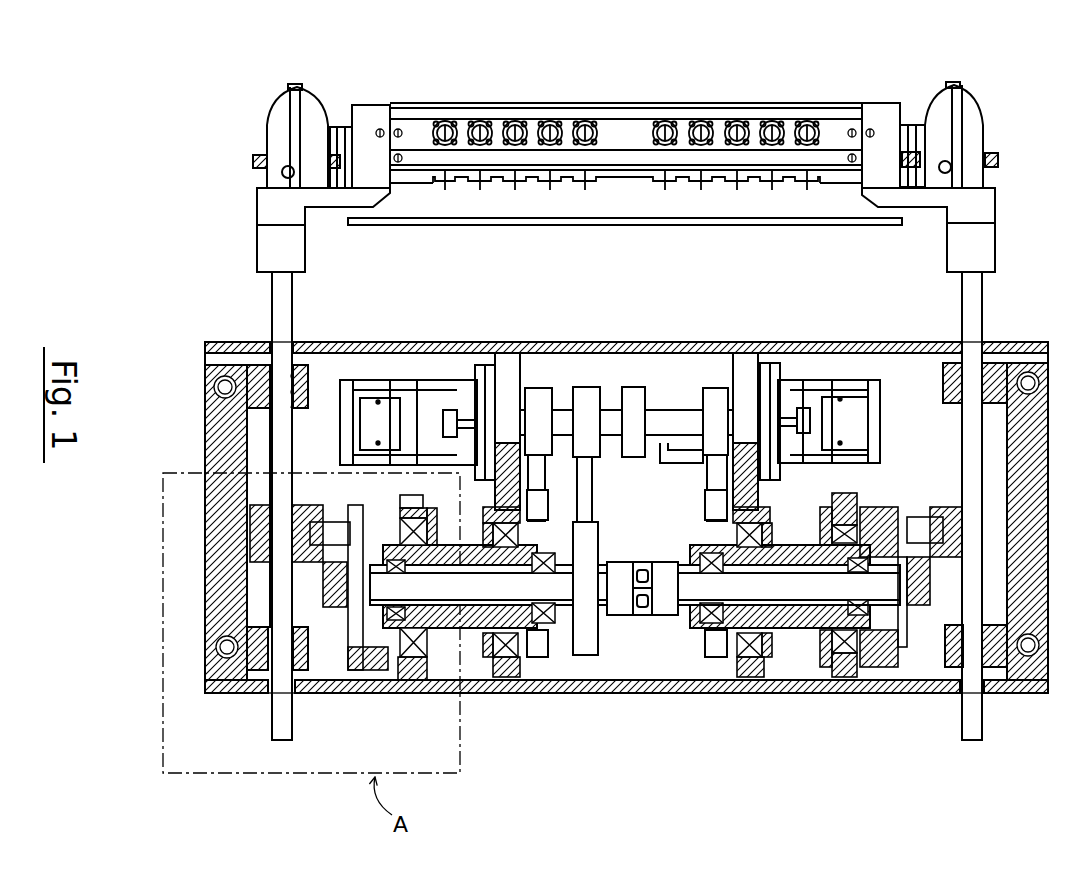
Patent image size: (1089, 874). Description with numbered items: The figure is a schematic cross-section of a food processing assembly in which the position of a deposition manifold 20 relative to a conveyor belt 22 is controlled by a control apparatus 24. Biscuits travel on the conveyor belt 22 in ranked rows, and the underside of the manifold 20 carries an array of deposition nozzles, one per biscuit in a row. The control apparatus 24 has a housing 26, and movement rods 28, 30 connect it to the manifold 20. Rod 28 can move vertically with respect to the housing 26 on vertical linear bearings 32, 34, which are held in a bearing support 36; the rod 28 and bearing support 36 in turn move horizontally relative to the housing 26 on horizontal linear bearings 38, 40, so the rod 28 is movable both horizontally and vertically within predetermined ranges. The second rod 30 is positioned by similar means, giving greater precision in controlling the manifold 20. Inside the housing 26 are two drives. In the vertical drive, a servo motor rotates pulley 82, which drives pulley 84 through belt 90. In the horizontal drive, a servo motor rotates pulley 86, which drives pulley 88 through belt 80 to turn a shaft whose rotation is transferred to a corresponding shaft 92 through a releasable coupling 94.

The deposition manifold 20 is at (760, 75).
The conveyor belt 22 is at (507, 228).
The control apparatus 24 is at (775, 752).
The housing 26 is at (357, 343).
The movement rod 28 is at (268, 293).
The second movement rod 30 is at (930, 500).
The vertical linear bearing 32 is at (806, 196).
The vertical linear bearing 34 is at (768, 196).
The bearing support 36 is at (212, 490).
The horizontal linear bearing 38 is at (208, 378).
The horizontal linear bearing 40 is at (217, 660).
The belt 80 is at (594, 488).
The pulley 82 is at (538, 396).
The pulley 84 is at (716, 657).
The pulley 86 is at (592, 394).
The pulley 88 is at (598, 518).
The belt 90 is at (542, 490).
The corresponding shaft 92 is at (798, 594).
The releasable coupling 94 is at (642, 624).